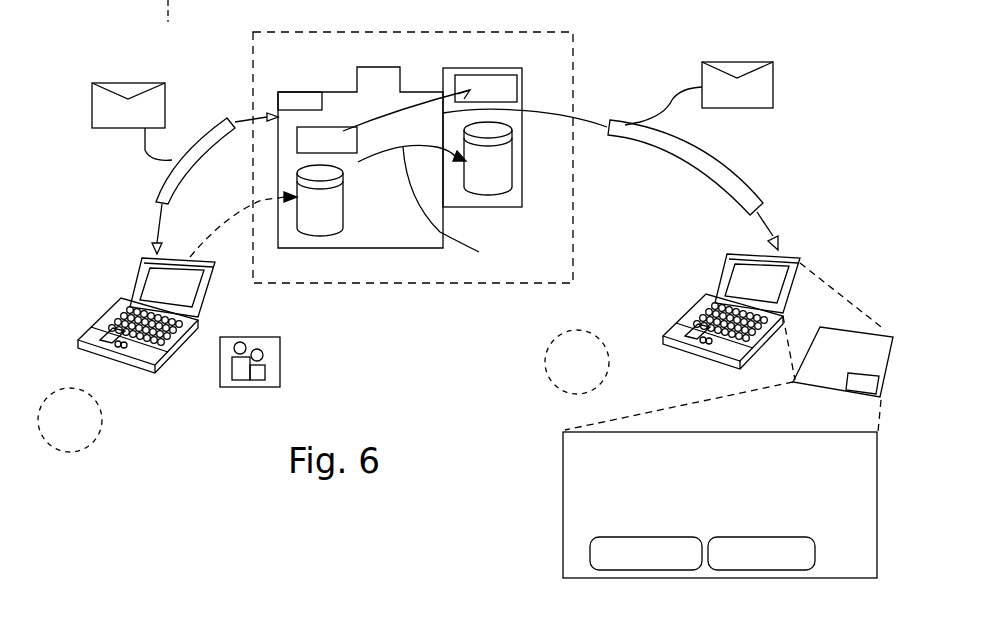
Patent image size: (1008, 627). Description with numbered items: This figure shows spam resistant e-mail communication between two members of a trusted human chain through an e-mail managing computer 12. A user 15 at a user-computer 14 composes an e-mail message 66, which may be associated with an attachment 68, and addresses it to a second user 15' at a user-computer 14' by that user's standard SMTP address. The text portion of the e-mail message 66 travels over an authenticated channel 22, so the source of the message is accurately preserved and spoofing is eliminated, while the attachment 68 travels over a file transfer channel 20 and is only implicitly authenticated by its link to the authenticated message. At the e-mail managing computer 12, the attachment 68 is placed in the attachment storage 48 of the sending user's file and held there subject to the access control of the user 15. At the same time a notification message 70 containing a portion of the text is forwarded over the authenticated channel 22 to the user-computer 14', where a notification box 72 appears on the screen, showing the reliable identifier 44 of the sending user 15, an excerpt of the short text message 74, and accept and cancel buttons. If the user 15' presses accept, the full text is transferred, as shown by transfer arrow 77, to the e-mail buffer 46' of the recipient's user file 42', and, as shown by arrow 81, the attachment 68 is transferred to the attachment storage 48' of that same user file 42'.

The e-mail managing computer 12 is at (458, 32).
The user-computer 14 is at (131, 308).
The user-computer 14' is at (774, 289).
The user 15 is at (70, 420).
The user 15' is at (577, 362).
The file transfer channel 20 is at (232, 204).
The authenticated channel 22 is at (235, 117).
The user file 42' is at (537, 175).
The identifier 44 is at (307, 100).
The e-mail buffer 46' is at (546, 91).
The attachment storage 48 is at (331, 247).
The attachment storage 48' is at (547, 171).
The e-mail message 66 is at (92, 124).
The attachment 68 is at (267, 383).
The notification message 70 is at (733, 62).
The notification box 72 is at (858, 398).
The text message 74 is at (572, 518).
The transfer arrow 77 is at (333, 135).
The arrow 81 is at (433, 208).